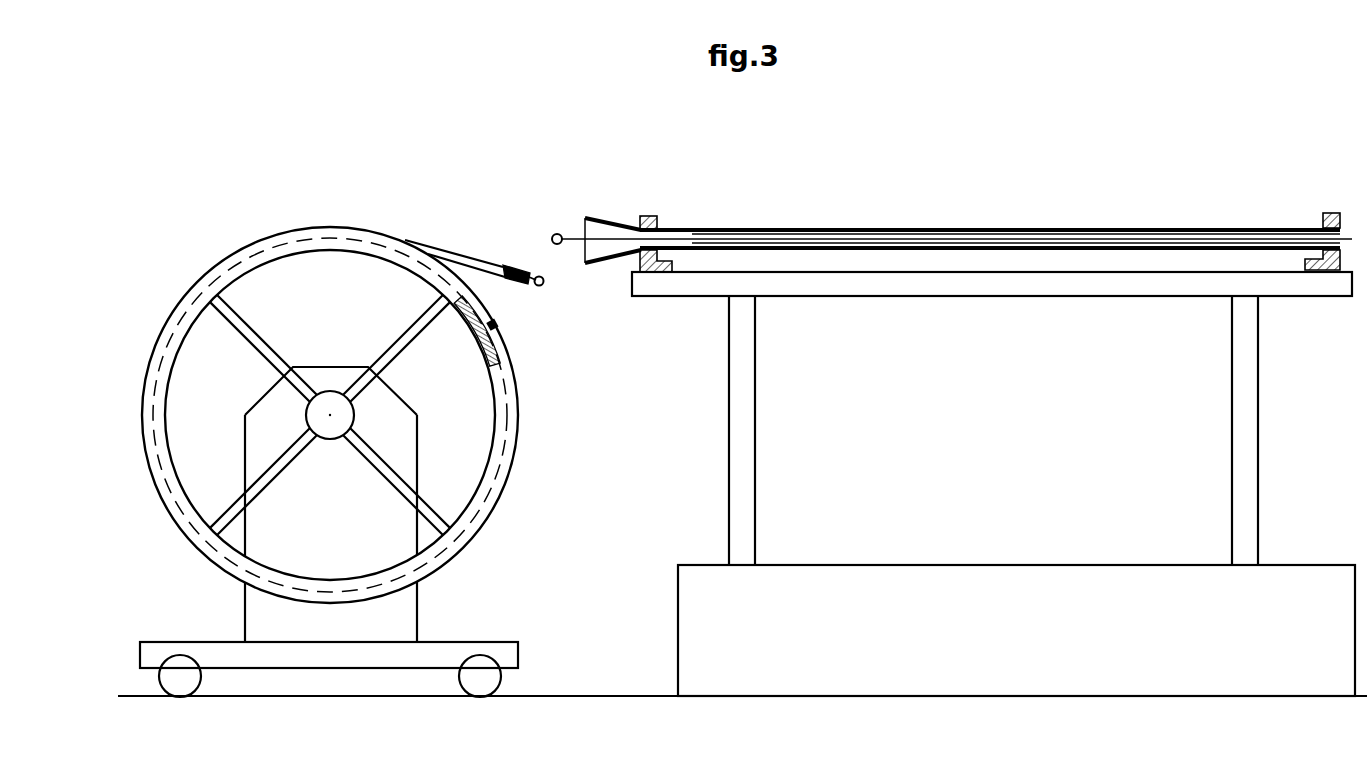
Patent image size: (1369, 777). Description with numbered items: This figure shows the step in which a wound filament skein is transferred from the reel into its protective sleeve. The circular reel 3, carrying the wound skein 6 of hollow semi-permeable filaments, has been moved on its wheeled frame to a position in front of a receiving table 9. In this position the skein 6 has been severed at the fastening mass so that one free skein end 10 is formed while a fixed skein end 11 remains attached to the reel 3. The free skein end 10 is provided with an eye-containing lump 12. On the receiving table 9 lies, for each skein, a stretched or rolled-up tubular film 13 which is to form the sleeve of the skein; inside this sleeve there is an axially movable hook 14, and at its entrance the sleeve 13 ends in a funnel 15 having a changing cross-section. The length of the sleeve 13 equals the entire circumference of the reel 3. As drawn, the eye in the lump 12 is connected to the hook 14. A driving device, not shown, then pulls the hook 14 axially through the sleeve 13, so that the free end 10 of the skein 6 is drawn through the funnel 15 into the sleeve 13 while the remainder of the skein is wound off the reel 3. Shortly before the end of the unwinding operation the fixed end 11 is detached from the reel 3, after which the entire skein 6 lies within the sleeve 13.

The reel 3 is at (517, 442).
The skein 6 is at (457, 254).
The receiving table 9 is at (744, 362).
The free skein end 10 is at (513, 270).
The fixed skein end 11 is at (498, 325).
The eye-containing lump 12 is at (542, 276).
The tubular film 13 is at (878, 229).
The hook 14 is at (745, 239).
The funnel 15 is at (598, 221).